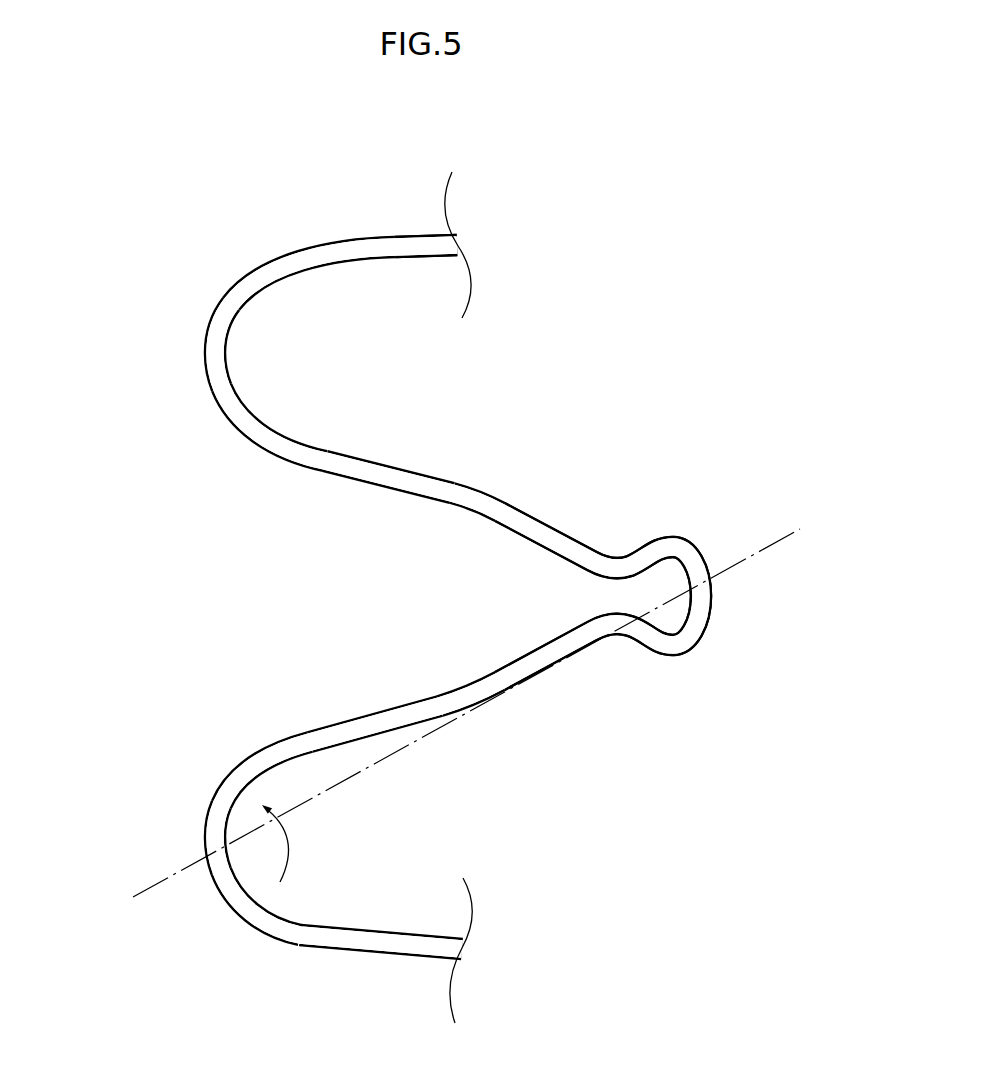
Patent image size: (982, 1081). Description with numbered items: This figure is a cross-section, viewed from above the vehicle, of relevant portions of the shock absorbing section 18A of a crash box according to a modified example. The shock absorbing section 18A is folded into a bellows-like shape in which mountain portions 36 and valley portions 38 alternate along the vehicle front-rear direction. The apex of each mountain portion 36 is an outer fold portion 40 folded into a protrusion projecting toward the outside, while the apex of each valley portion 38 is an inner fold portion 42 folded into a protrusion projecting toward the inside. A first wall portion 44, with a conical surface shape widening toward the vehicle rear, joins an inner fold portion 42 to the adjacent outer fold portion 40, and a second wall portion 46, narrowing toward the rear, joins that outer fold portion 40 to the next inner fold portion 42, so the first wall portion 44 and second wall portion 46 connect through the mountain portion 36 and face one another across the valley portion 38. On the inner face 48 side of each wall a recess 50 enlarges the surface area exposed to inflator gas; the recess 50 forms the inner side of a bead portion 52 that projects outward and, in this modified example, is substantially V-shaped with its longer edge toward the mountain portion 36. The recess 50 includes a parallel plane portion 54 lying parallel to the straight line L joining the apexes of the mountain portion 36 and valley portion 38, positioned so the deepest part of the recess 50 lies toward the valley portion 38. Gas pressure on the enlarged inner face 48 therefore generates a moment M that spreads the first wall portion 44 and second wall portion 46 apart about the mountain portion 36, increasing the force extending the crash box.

The shock absorbing section 18A is at (386, 234).
The mountain portion 36 is at (220, 290).
The outer fold portion 40 is at (205, 356).
The first wall portion 44 is at (298, 262).
The second wall portion 46 is at (400, 468).
The inner face 48 is at (407, 258).
The recess 50 is at (590, 542).
The bead portion 52 is at (505, 526).
The parallel plane portion 54 is at (540, 521).
The valley portion 38 is at (702, 540).
The inner fold portion 42 is at (705, 585).
The straight line L is at (753, 552).
The moment M is at (290, 833).